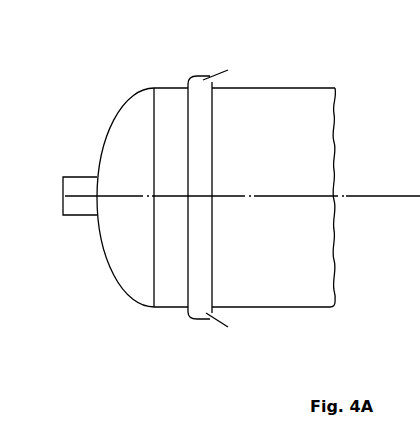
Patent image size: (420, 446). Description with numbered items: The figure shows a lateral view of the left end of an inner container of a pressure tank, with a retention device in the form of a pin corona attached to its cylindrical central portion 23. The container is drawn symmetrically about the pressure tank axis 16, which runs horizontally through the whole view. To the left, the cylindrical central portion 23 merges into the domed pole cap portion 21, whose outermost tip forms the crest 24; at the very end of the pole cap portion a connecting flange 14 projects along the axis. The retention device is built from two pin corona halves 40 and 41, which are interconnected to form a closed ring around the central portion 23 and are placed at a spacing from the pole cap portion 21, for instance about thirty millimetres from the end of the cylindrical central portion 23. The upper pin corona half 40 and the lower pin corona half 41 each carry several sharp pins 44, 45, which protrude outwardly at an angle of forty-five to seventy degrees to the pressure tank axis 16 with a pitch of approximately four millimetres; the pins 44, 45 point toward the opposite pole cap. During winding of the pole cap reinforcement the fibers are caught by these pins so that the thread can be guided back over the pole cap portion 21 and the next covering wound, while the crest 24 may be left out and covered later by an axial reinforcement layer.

The connecting flange 14 is at (78, 182).
The pressure tank axis 16 is at (368, 197).
The pole cap portion 21 is at (130, 127).
The central portion 23 is at (290, 100).
The crest 24 is at (108, 267).
The pin corona half 40 is at (207, 137).
The pin corona half 41 is at (208, 265).
The sharp pin 44 is at (217, 72).
The sharp pin 45 is at (222, 327).